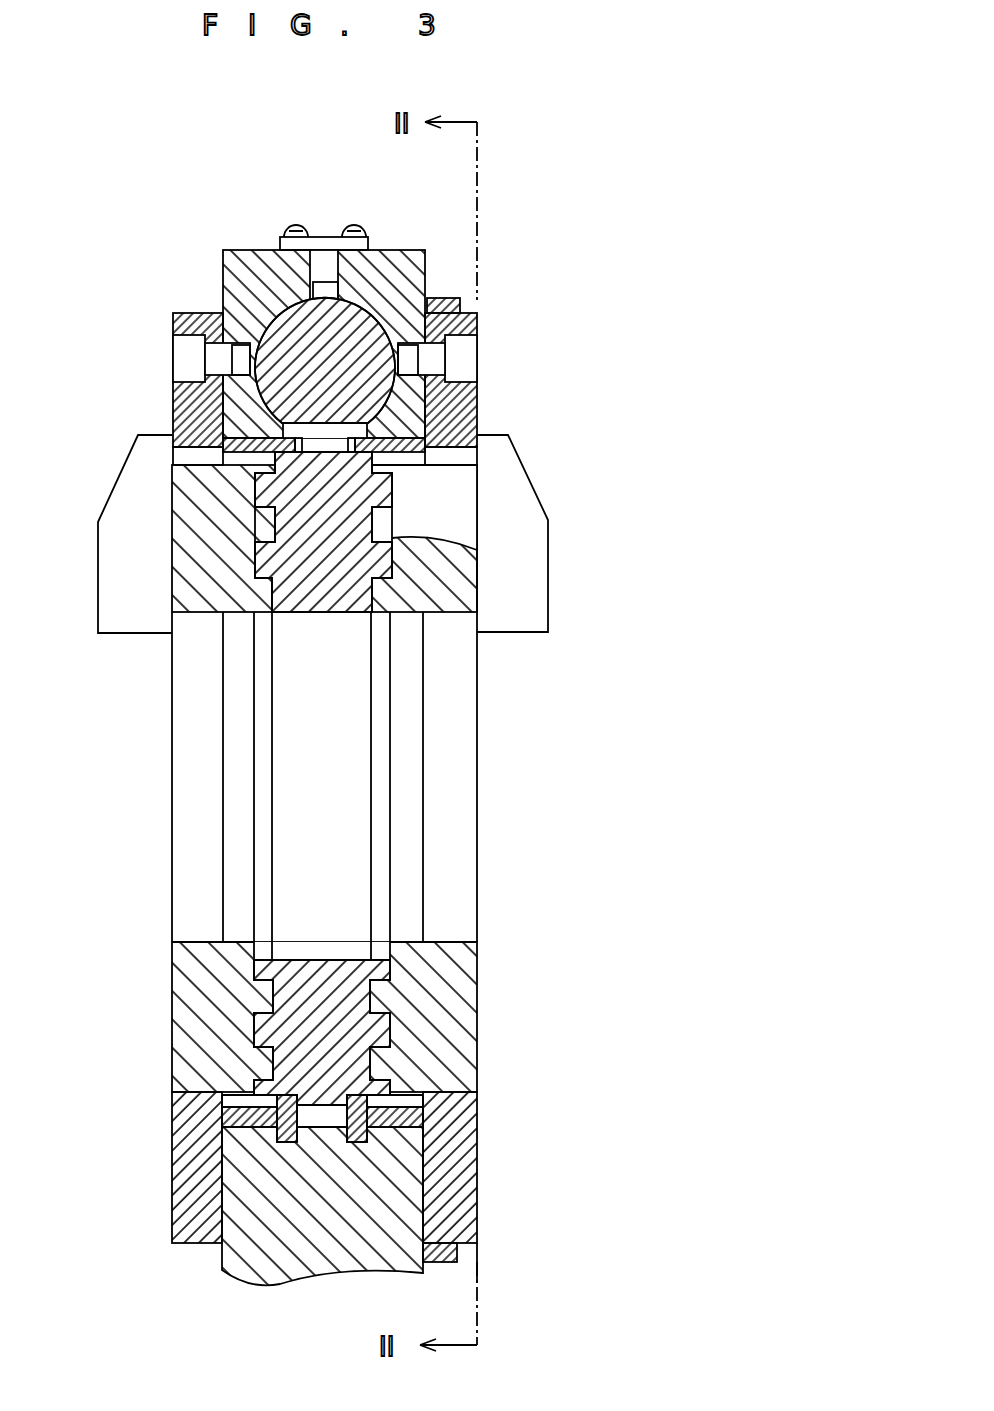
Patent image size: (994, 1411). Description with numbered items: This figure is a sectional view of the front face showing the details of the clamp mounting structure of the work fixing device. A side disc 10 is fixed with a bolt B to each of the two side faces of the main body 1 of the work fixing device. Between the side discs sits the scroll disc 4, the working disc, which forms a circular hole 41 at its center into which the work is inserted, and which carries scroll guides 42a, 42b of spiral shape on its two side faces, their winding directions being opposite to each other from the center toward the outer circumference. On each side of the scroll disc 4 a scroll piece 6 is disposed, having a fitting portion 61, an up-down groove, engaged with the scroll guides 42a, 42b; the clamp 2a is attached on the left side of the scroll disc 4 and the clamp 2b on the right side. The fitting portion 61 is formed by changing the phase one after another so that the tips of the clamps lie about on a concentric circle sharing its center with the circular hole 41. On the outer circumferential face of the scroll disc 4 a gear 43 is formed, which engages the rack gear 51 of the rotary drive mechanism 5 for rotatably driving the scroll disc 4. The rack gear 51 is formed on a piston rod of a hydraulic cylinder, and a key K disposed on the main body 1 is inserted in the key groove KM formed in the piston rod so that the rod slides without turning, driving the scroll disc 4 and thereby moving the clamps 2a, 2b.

The main body of work fixing device 1 is at (363, 1207).
The clamp 2a is at (108, 592).
The clamp 2b is at (530, 588).
The scroll disc 4 is at (330, 554).
The circular hole 41 is at (310, 960).
The scroll guide 42a is at (268, 563).
The scroll guide 42b is at (360, 560).
The gear 43 is at (307, 447).
The rotary drive mechanism 5 is at (335, 290).
The rack gear 51 is at (357, 435).
The scroll piece 6 is at (455, 575).
The fitting portion 61 is at (262, 527).
The side disc 10 is at (192, 1137).
The bolt B is at (185, 357).
The key K is at (384, 300).
The key groove KM is at (333, 292).